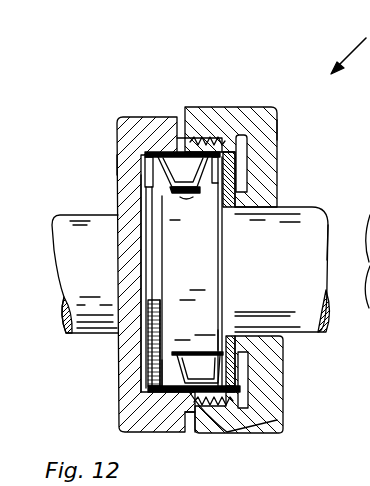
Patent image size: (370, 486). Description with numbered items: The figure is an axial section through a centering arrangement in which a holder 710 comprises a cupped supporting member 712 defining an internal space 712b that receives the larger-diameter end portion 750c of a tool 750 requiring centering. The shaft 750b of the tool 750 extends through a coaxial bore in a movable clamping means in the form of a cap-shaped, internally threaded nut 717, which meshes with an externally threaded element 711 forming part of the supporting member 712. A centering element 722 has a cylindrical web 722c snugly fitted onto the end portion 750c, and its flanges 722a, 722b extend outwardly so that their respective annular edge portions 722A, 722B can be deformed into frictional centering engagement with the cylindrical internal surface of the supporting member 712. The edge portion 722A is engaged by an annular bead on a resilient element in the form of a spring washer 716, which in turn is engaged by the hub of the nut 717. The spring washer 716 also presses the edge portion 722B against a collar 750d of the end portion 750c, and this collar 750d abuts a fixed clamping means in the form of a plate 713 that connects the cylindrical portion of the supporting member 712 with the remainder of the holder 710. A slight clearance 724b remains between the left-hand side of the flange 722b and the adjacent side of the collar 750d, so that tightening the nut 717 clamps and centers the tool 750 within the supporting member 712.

The holder 710 is at (95, 336).
The externally threaded element 711 is at (223, 143).
The cupped supporting member 712 is at (146, 122).
The internal space 712b is at (206, 435).
The plate 713 is at (117, 168).
The spring washer 716 is at (239, 367).
The cap-shaped internally threaded nut 717 is at (278, 128).
The centering element 722 is at (188, 177).
The flange 722a is at (217, 347).
The annular edge portion 722A is at (247, 435).
The flange 722b is at (175, 420).
The annular edge portion 722B is at (187, 392).
The cylindrical web 722c is at (186, 198).
The clearance 724b is at (146, 378).
The tool 750 is at (293, 207).
The shaft 750b is at (322, 238).
The larger-diameter end portion 750c is at (205, 281).
The collar 750d is at (121, 260).